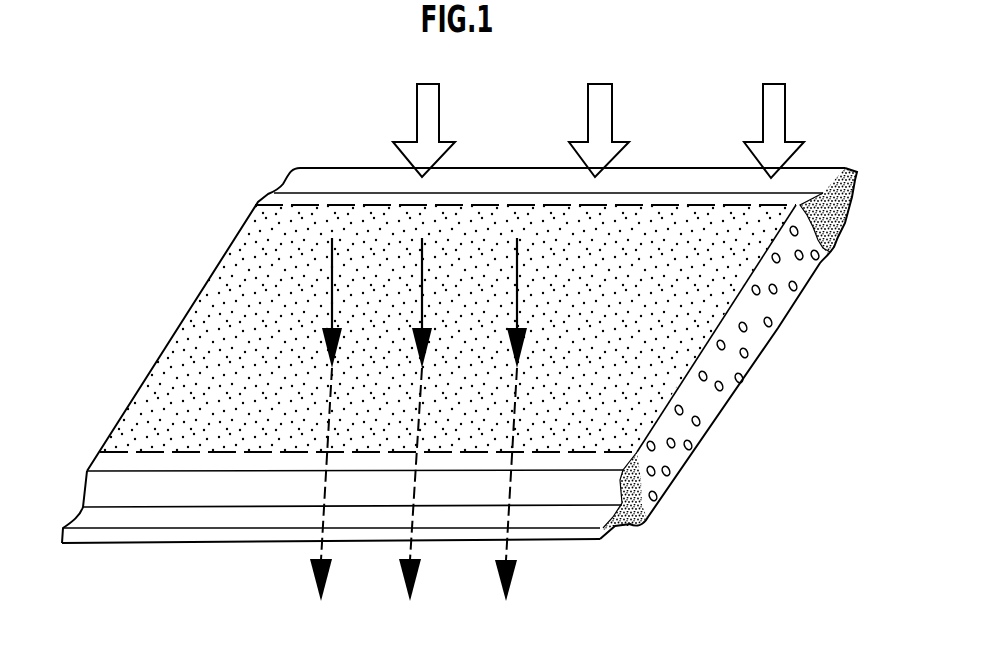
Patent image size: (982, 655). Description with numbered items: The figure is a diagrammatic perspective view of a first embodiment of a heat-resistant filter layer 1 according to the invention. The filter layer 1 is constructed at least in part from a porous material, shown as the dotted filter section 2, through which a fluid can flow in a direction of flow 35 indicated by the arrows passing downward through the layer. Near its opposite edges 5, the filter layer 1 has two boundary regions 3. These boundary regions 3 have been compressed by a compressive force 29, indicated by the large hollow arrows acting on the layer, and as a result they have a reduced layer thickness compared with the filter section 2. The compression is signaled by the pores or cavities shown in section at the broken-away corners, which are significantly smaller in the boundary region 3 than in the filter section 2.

The filter layer 1 is at (250, 144).
The filter section 2 is at (218, 308).
The boundary region 3 is at (100, 518).
The edge 5 is at (210, 536).
The compressive force 29 is at (430, 112).
The direction of flow 35 is at (518, 288).